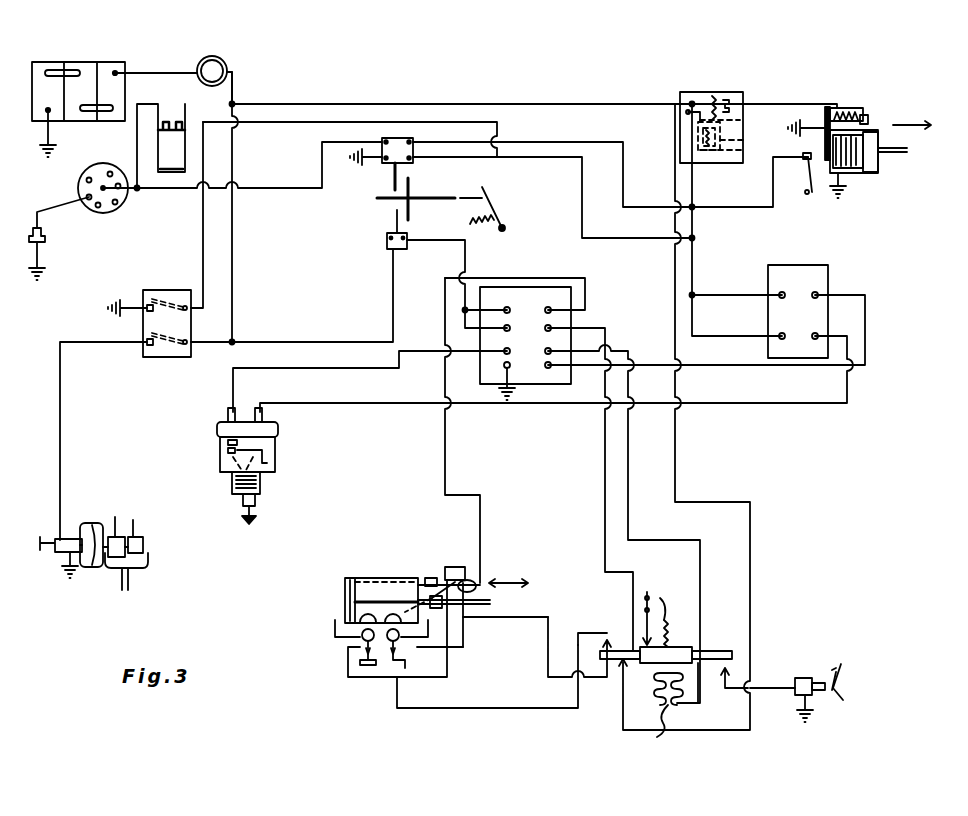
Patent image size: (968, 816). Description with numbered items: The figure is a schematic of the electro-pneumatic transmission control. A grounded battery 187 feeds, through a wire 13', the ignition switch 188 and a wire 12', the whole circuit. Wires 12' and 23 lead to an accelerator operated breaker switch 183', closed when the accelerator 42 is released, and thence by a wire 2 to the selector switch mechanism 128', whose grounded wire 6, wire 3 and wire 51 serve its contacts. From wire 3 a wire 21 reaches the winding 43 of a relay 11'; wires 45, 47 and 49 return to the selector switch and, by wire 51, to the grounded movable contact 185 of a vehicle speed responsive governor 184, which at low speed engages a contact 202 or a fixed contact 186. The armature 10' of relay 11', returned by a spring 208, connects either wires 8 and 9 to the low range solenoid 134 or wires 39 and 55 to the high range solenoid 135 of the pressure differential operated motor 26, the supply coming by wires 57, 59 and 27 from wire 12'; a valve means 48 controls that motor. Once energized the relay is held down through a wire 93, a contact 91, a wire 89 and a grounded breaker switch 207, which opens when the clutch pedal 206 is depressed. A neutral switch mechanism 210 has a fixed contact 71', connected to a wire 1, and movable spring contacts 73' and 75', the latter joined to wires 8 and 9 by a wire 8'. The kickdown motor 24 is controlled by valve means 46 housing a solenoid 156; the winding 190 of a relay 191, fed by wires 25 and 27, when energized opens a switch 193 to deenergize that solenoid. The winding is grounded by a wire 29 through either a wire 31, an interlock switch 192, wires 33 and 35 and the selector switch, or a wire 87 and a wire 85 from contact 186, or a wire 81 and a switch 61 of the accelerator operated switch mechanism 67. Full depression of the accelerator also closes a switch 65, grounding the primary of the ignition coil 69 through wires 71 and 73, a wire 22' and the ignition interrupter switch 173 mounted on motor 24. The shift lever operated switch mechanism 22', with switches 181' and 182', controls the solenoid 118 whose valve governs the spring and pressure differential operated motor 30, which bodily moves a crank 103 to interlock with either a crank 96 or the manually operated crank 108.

The battery 187 is at (83, 64).
The wire 13' is at (156, 53).
The ignition switch 188 is at (227, 60).
The wire 12' is at (256, 208).
The wire 27 is at (510, 102).
The wire 73 is at (138, 146).
The coil 69 is at (170, 163).
The wire 71 is at (259, 179).
The switch 65 is at (397, 138).
The switch 61 is at (407, 163).
The switch mechanism 67 is at (382, 163).
The accelerator 42 is at (487, 200).
The breaker switch 183' is at (418, 255).
The wire 23 is at (308, 340).
The wire 2 is at (464, 260).
The wire 81 is at (582, 200).
The wire / shift lever operated switch mechanism 22' is at (458, 255).
The switch 181' is at (119, 283).
The switch 182' is at (111, 331).
The wire 59 is at (675, 182).
The wire 29 is at (694, 226).
The relay 191 is at (695, 82).
The wire 25 is at (712, 82).
The switch 193 is at (767, 100).
The winding 190 is at (747, 140).
The valve means 46 is at (848, 108).
The solenoid 156 is at (863, 110).
The pressure differential operated motor 24 is at (863, 175).
The ignition interrupter switch 173 is at (809, 198).
The wire 31 is at (722, 292).
The wire 87 is at (707, 335).
The interlock switch 192 is at (827, 292).
The wire 33 is at (867, 318).
The wire 85 is at (387, 407).
The wire 35 is at (702, 367).
The wire 49 is at (618, 347).
The wire 21 is at (605, 547).
The wire 47 is at (702, 567).
The selector switch mechanism 128' is at (515, 318).
The wire 3 is at (600, 318).
The grounded wire 6 is at (507, 373).
The wire 51 is at (333, 367).
The wire 1 is at (447, 470).
The vehicle speed responsive governor 184 is at (277, 450).
The contact 186 is at (272, 473).
The contact 202 is at (185, 445).
The contact 185 is at (220, 470).
The solenoid 118 is at (62, 553).
The spring and pressure differential operated motor 30 is at (88, 528).
The crank 108 is at (117, 515).
The crank 103 is at (142, 523).
The crank 96 is at (122, 593).
The pressure differential operated motor 26 is at (345, 596).
The neutral switch mechanism 210 is at (478, 563).
The movable spring contact 73' is at (437, 560).
The fixed contact 71' is at (464, 580).
The movable spring contact 75' is at (478, 589).
The solenoid 134 is at (358, 633).
The solenoid 135 is at (395, 641).
The wire 8 is at (375, 680).
The valve means 48 is at (383, 676).
The wire 39 is at (460, 658).
The wire 8' is at (498, 629).
The wire 55 is at (547, 655).
The wire 9 is at (487, 712).
The armature 10' is at (673, 637).
The wire 93 is at (642, 677).
The relay 11' is at (657, 605).
The spring 208 is at (668, 622).
The wire 45 is at (693, 703).
The winding 43 is at (653, 737).
The wire 57 is at (618, 718).
The contact 91 is at (730, 668).
The wire 89 is at (777, 697).
The breaker switch 207 is at (808, 678).
The clutch pedal 206 is at (845, 683).